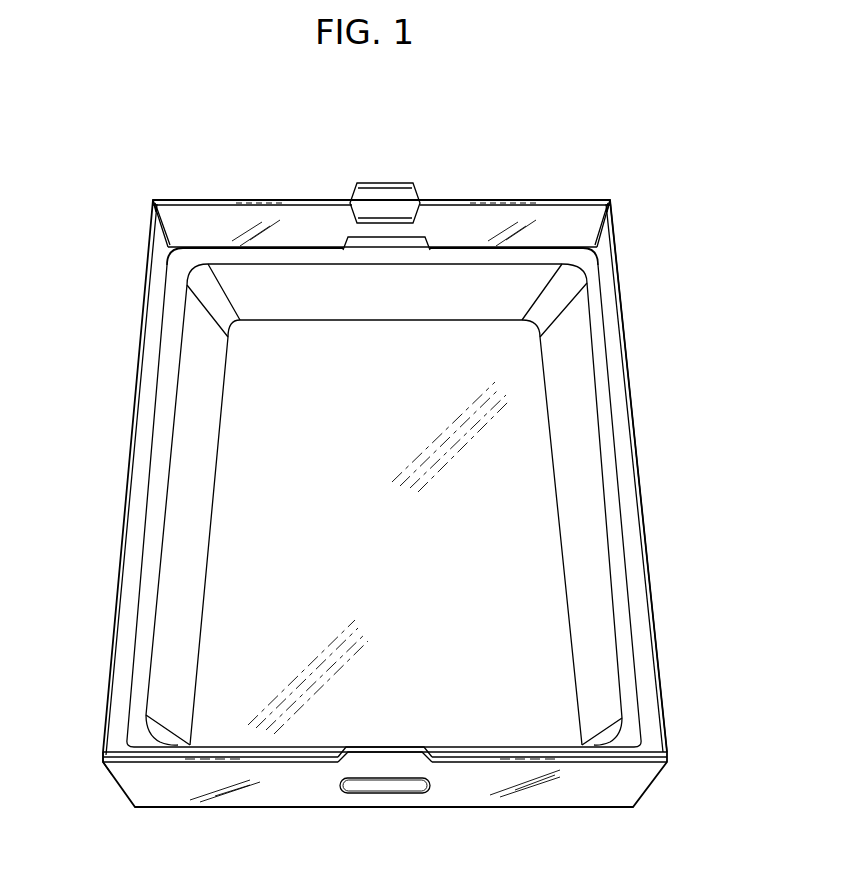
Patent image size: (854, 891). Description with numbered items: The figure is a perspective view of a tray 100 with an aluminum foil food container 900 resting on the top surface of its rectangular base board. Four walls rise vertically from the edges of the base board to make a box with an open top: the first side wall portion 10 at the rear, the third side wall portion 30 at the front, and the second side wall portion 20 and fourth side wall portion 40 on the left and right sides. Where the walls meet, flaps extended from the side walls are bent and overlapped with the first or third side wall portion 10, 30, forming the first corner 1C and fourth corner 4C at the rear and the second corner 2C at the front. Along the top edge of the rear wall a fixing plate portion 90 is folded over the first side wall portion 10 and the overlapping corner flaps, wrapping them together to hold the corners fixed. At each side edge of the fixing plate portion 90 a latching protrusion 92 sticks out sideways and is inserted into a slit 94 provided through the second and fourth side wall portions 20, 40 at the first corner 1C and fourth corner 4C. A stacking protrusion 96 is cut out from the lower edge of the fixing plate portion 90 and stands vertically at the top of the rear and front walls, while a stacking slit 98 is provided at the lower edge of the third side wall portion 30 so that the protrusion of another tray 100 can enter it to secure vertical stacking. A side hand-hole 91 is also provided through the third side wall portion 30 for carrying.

The tray 100 is at (601, 174).
The first side wall portion 10 is at (253, 199).
The fixing plate portion 90 is at (452, 226).
The stacking protrusion 96 is at (386, 198).
The latching protrusion 92 is at (186, 240).
The slit 94 is at (155, 232).
The first corner 1C is at (154, 199).
The fourth corner 4C is at (586, 203).
The second corner 2C is at (104, 768).
The second side wall portion 20 is at (152, 350).
The fourth side wall portion 40 is at (612, 343).
The food container 900 is at (610, 488).
The third side wall portion 30 is at (601, 790).
The stacking slit 98 is at (378, 808).
The side hand-hole 91 is at (405, 786).